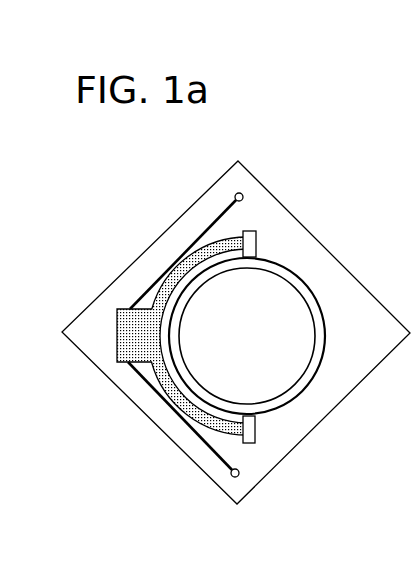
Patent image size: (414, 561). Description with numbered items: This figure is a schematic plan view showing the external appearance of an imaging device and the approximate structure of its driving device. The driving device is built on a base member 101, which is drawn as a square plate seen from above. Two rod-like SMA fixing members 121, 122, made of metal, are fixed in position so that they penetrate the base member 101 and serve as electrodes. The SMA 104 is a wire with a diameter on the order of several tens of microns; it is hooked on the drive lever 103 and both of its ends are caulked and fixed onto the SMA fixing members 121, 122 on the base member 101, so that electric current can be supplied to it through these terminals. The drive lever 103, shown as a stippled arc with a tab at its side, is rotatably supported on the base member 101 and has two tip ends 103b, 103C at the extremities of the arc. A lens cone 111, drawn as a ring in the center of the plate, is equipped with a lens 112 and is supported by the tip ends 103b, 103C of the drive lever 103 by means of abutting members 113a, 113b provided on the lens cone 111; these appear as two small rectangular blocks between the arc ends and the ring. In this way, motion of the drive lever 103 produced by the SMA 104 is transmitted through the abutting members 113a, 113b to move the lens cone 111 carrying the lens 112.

The base member 101 is at (315, 430).
The drive lever 103 is at (126, 314).
The tip end of drive lever 103C is at (228, 232).
The tip end of drive lever 103b is at (187, 420).
The SMA 104 is at (213, 455).
The lens cone 111 is at (322, 334).
The lens 112 is at (287, 297).
The abutting member 113a is at (253, 438).
The abutting member 113b is at (250, 245).
The SMA fixing member 121 is at (240, 478).
The SMA fixing member 122 is at (242, 192).